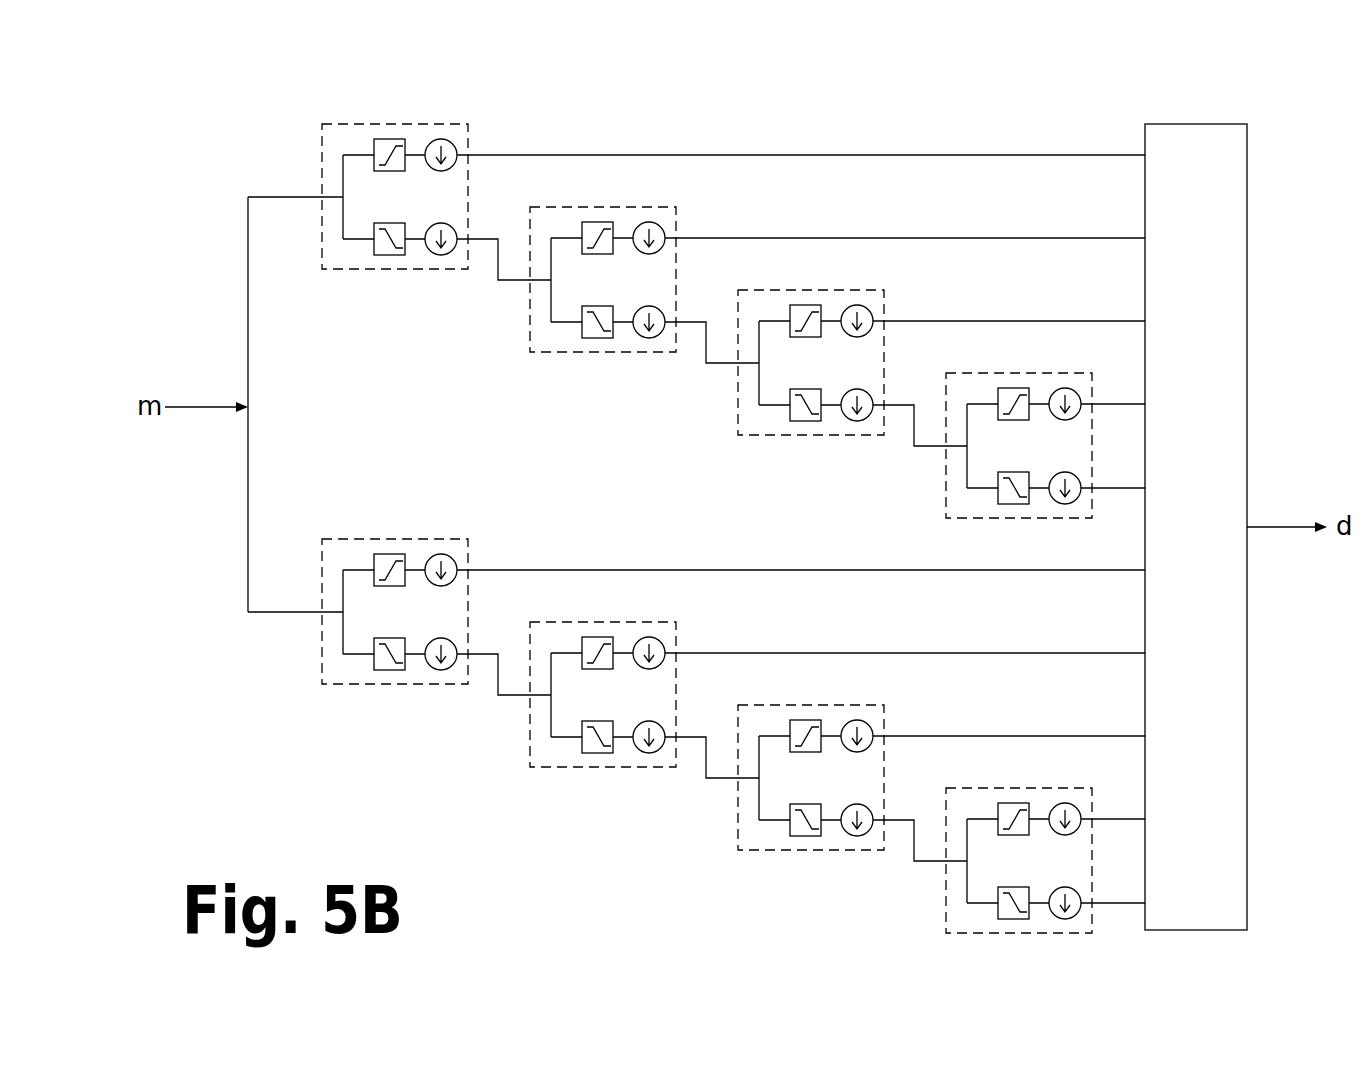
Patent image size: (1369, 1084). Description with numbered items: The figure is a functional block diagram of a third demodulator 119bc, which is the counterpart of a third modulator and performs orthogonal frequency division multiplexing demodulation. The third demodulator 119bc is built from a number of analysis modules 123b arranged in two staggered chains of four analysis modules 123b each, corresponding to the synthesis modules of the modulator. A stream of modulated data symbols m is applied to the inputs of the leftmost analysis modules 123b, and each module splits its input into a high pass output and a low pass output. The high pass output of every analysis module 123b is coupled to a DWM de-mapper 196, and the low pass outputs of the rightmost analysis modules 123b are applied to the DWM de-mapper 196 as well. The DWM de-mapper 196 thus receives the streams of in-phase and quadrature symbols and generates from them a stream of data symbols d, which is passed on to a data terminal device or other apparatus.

The third demodulator 119bc is at (696, 528).
The analysis module 123b is at (394, 280).
The DWM de-mapper 196 is at (1258, 268).